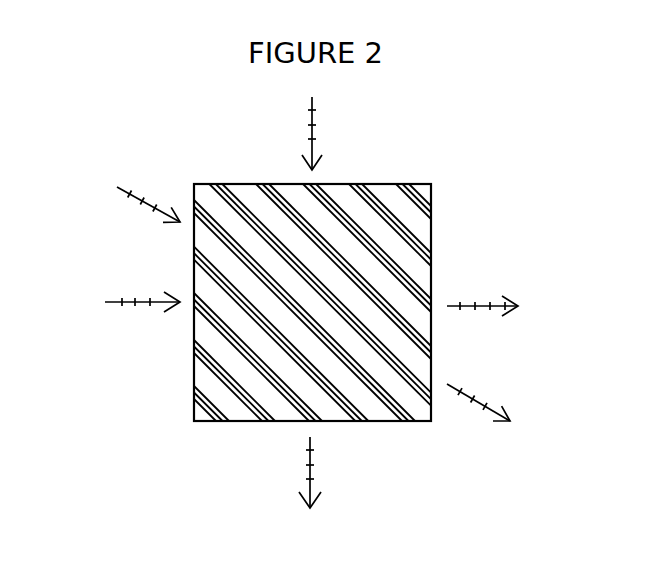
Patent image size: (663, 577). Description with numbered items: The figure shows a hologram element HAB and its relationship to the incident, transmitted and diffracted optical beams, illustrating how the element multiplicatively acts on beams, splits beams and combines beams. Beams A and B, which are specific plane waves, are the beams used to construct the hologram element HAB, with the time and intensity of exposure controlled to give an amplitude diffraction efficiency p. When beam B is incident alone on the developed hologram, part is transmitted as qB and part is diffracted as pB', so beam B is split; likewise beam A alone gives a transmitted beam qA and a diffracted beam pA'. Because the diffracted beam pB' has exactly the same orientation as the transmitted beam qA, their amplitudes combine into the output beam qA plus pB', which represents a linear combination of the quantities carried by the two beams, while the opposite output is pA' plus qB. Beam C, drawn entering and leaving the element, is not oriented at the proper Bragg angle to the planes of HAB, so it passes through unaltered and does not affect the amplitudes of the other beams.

The hologram element HAB is at (420, 183).
The beam A is at (133, 301).
The beam B is at (319, 133).
The beam C is at (313, 304).